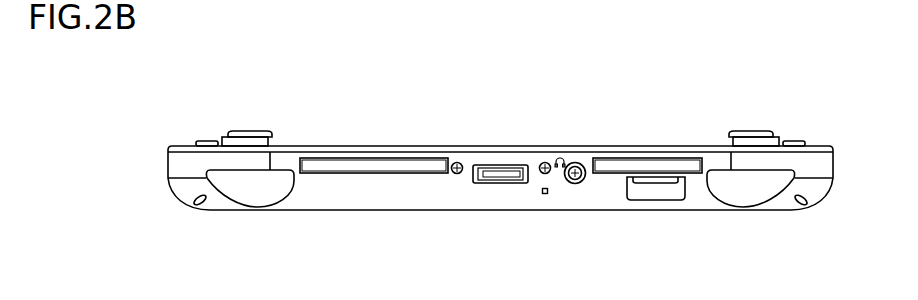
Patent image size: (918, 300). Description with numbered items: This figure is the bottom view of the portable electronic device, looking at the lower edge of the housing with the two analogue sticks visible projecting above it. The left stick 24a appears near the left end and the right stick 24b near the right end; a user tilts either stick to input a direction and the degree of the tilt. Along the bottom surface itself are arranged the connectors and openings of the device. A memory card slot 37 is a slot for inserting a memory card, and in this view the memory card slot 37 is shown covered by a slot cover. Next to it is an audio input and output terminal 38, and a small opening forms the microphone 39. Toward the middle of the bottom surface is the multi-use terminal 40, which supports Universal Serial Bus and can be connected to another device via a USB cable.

The left stick 24a is at (249, 131).
The right stick 24b is at (750, 131).
The multi-use terminal 40 is at (498, 165).
The audio input and output terminal 38 is at (577, 162).
The microphone 39 is at (545, 196).
The memory card slot 37 is at (655, 190).